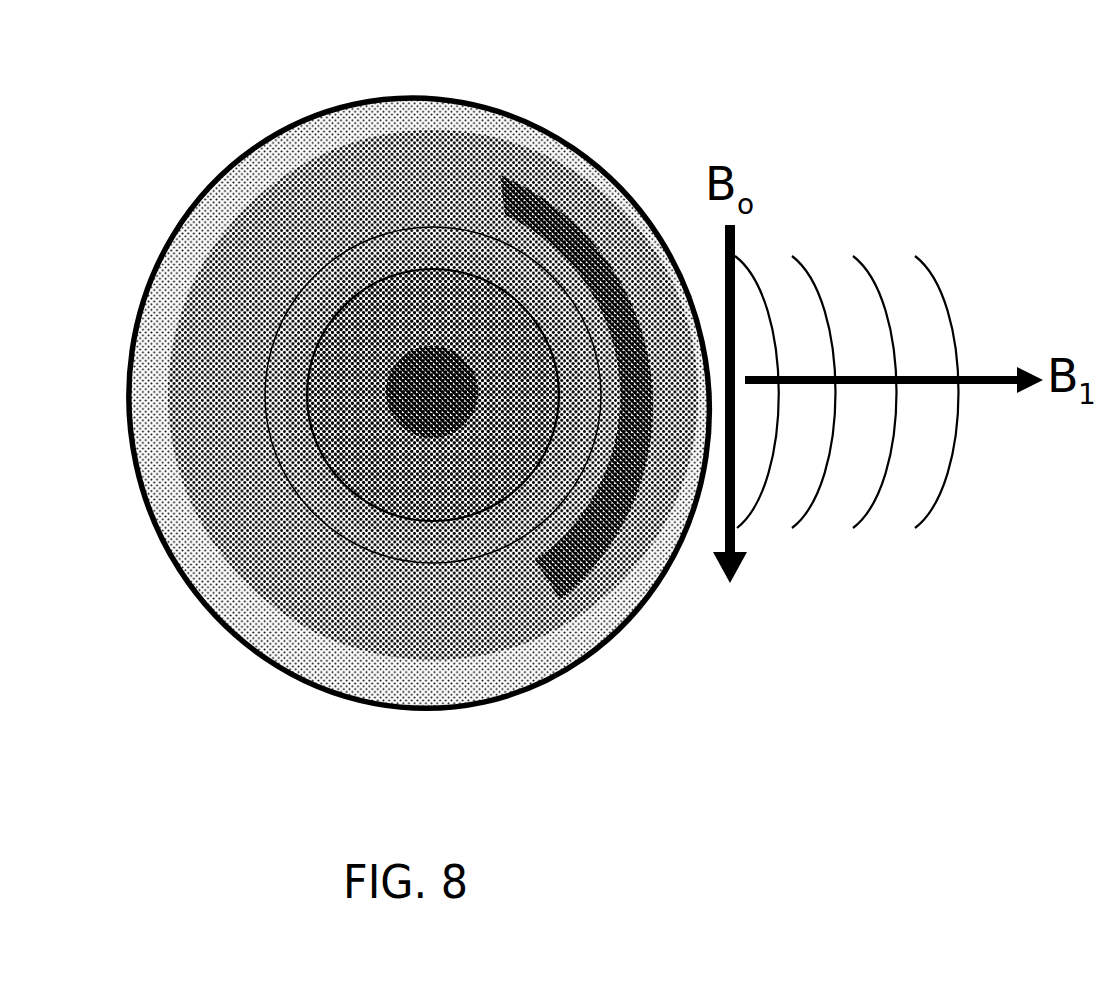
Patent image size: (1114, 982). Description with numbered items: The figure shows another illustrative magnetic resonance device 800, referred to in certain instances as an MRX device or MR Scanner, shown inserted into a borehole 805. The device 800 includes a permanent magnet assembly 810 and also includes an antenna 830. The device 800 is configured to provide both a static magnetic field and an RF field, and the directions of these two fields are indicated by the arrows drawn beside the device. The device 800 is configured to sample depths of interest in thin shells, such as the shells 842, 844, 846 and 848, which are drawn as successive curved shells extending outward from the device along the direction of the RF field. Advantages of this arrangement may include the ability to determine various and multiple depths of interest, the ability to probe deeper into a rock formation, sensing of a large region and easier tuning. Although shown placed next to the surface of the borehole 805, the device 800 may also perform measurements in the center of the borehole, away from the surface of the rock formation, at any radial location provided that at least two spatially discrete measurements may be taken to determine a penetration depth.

The magnetic resonance device 800 is at (575, 177).
The borehole 805 is at (218, 223).
The permanent magnet assembly 810 is at (440, 277).
The antenna 830 is at (567, 572).
The shell 842 is at (737, 527).
The shell 844 is at (808, 257).
The shell 846 is at (853, 528).
The shell 848 is at (933, 257).